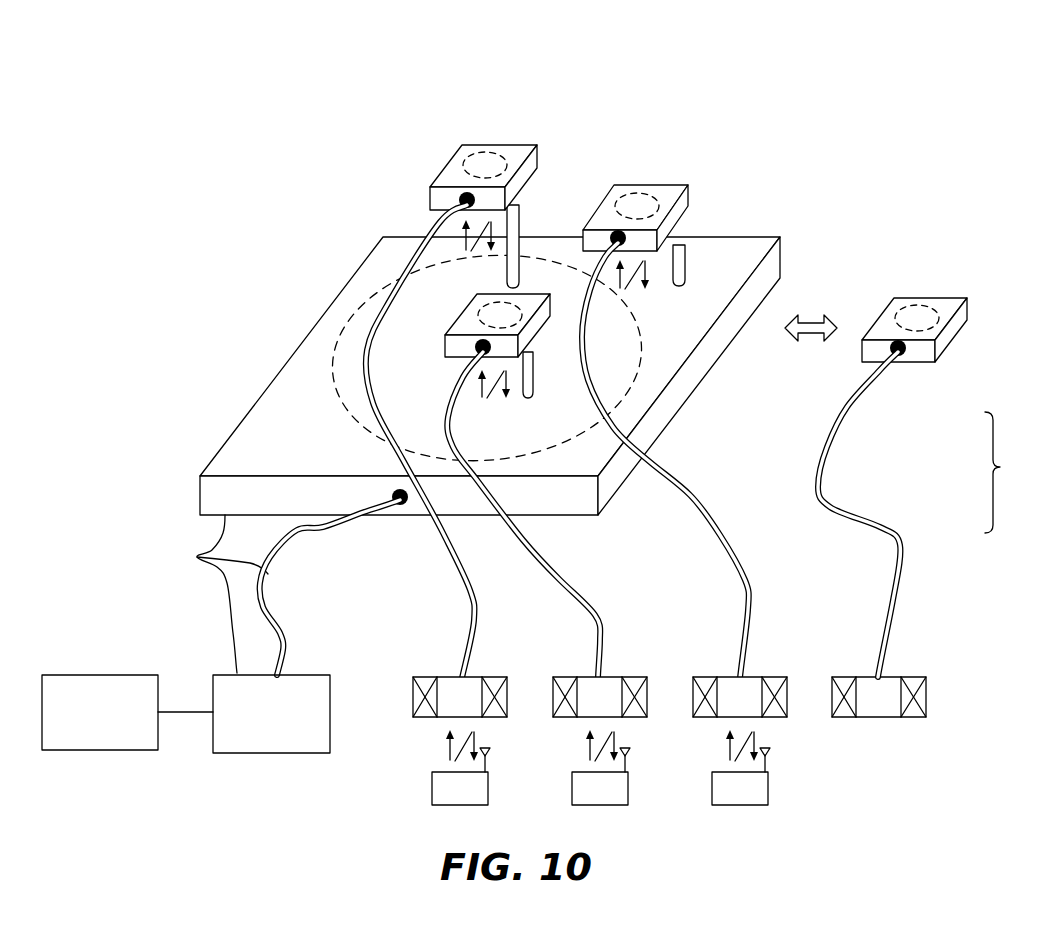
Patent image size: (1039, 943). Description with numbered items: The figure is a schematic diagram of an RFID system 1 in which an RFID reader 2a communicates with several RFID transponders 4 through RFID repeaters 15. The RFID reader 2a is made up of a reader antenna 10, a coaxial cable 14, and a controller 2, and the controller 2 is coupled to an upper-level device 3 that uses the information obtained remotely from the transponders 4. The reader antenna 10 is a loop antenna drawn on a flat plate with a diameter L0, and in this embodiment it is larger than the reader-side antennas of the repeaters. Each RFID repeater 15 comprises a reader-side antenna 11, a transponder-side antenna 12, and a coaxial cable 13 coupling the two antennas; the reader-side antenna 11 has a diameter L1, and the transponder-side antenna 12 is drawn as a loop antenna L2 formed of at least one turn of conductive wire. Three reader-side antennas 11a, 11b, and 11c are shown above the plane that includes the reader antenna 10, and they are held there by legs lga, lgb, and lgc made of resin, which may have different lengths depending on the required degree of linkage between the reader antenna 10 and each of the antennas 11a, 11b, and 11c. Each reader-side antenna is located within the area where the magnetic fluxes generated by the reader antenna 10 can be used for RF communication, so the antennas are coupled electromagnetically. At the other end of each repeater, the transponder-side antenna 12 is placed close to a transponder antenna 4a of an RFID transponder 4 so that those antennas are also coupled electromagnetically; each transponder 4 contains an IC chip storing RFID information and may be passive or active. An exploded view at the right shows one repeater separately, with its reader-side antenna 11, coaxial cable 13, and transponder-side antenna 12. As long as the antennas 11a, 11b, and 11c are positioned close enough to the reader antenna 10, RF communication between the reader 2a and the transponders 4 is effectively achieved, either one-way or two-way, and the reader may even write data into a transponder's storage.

The RFID system 1 is at (490, 348).
The controller 2 is at (312, 673).
The RFID reader 2a is at (284, 582).
The upper-level device 3 is at (123, 672).
The RFID transponder 4 is at (624, 782).
The transponder antenna 4a is at (492, 761).
The reader antenna 10 is at (750, 245).
The reader-side antenna 11 is at (947, 340).
The reader-side antenna 11a is at (533, 189).
The reader-side antenna 11b is at (550, 294).
The reader-side antenna 11c is at (673, 197).
The transponder-side antenna 12 is at (672, 477).
The coaxial cable 13 is at (890, 523).
The coaxial cable 14 is at (270, 570).
The RFID repeater 15 is at (561, 203).
The diameter of the reader antenna L0 is at (333, 355).
The diameter of the reader-side antenna L1 is at (468, 148).
The loop antenna L2 is at (493, 717).
The leg lga is at (530, 245).
The leg lgb is at (538, 368).
The leg lgc is at (668, 226).